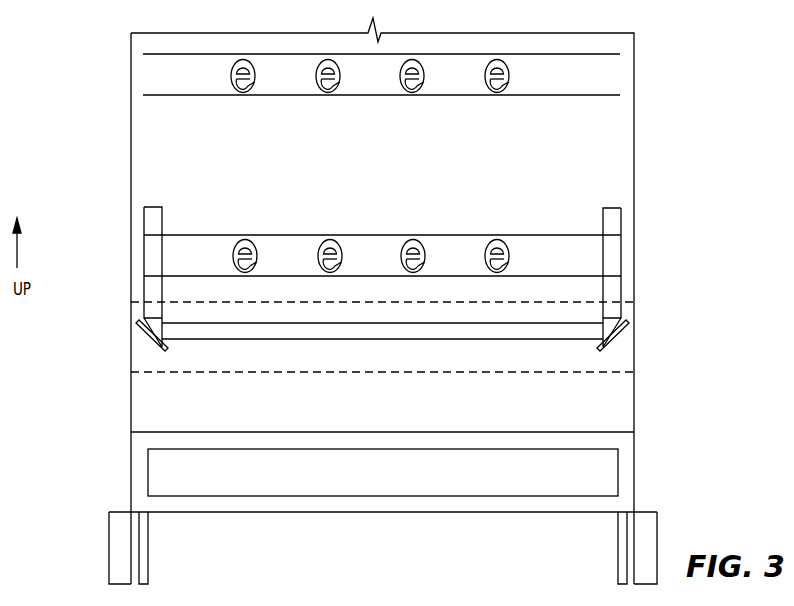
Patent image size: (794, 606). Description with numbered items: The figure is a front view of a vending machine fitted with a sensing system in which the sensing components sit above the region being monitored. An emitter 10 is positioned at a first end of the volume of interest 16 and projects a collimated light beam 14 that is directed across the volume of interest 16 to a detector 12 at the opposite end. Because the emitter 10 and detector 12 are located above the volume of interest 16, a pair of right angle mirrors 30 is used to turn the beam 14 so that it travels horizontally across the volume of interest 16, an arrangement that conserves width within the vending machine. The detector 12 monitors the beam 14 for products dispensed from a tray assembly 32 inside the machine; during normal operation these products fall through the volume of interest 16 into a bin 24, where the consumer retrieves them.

The emitter 10 is at (152, 225).
The detector 12 is at (612, 213).
The collimated light beam 14 is at (242, 333).
The volume of interest 16 is at (578, 372).
The bin 24 is at (462, 470).
The right angle mirrors 30 is at (143, 337).
The tray assembly 32 is at (208, 73).